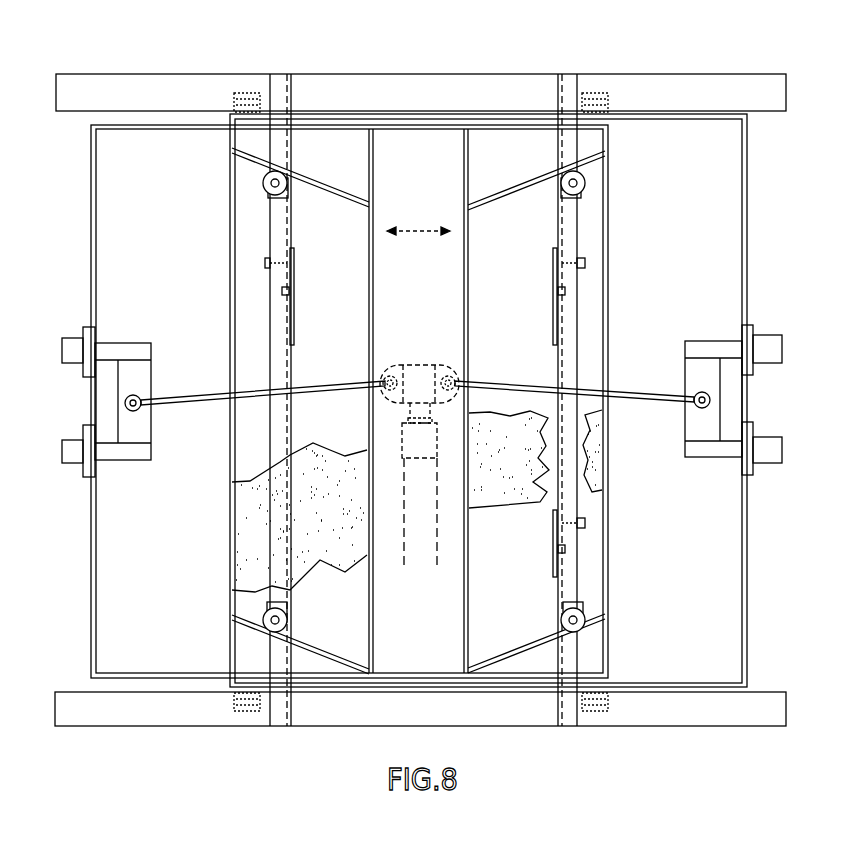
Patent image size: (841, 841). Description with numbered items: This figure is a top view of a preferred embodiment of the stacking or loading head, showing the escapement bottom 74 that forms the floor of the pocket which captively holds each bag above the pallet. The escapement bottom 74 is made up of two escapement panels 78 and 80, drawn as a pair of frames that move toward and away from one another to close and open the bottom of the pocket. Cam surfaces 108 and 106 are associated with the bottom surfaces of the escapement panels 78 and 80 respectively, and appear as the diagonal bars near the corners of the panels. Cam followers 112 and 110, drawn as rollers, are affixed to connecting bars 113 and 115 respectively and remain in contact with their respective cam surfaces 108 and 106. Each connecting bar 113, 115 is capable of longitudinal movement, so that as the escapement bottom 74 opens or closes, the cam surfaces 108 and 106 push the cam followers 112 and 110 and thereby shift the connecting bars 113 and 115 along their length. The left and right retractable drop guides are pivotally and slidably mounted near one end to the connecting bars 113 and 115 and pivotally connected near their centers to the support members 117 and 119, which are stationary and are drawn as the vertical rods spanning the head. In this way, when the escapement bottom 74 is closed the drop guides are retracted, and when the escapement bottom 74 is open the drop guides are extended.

The escapement bottom 74 is at (422, 603).
The escapement panel 78 is at (327, 231).
The escapement panel 80 is at (528, 237).
The cam surface 106 is at (543, 175).
The cam surface 108 is at (298, 175).
The cam follower 110 is at (587, 180).
The cam follower 112 is at (262, 183).
The connecting bar 113 is at (283, 287).
The connecting bar 115 is at (568, 323).
The support member 117 is at (270, 93).
The support member 119 is at (583, 383).